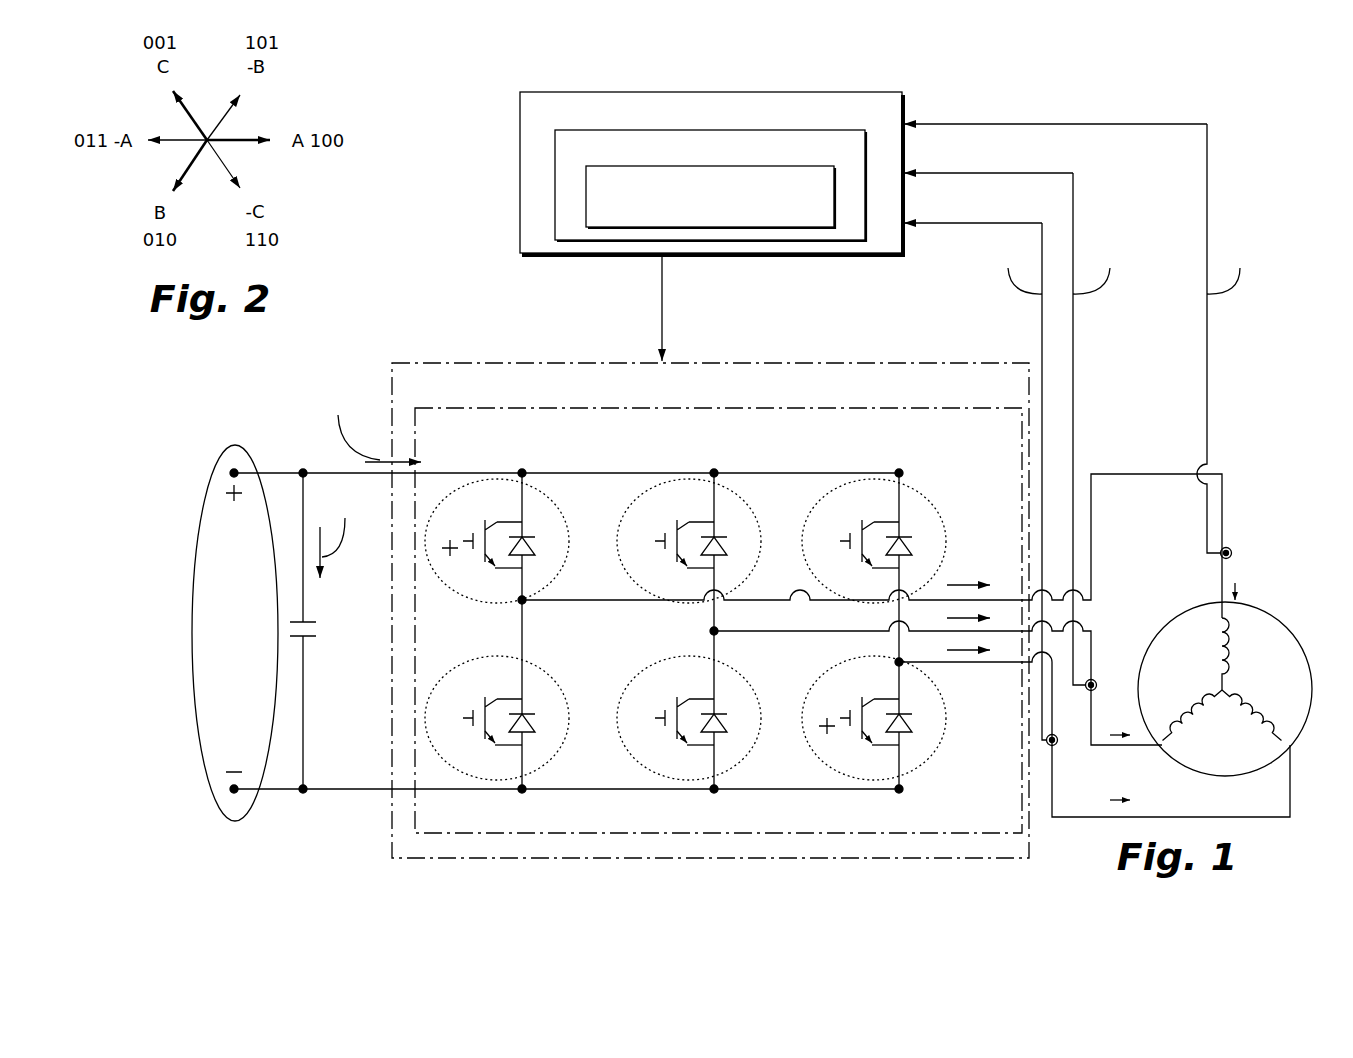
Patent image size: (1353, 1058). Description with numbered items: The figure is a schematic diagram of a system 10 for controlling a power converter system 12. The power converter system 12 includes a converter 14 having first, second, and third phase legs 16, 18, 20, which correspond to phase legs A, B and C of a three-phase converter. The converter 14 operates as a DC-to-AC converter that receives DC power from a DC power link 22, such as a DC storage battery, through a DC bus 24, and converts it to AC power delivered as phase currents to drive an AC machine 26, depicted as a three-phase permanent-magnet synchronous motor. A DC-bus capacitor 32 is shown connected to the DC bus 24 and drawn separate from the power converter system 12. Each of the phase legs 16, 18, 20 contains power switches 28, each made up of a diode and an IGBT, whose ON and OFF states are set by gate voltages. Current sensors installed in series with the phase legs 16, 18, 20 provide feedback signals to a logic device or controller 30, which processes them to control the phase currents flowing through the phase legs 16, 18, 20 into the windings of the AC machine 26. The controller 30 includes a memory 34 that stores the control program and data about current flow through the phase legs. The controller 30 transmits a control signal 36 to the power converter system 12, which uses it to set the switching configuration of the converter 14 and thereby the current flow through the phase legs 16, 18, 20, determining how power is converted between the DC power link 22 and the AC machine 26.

The system 10 is at (990, 85).
The power converter system 12 is at (570, 362).
The converter 14 is at (880, 408).
The first phase leg 16 is at (521, 603).
The second phase leg 18 is at (713, 631).
The third phase leg 20 is at (898, 662).
The DC power link 22 is at (232, 447).
The DC bus 24 is at (323, 465).
The AC machine 26 is at (1283, 628).
The power switches 28 is at (487, 480).
The controller 30 is at (710, 92).
The DC-bus capacitor 32 is at (310, 648).
The memory 34 is at (858, 130).
The control signal 36 is at (657, 302).